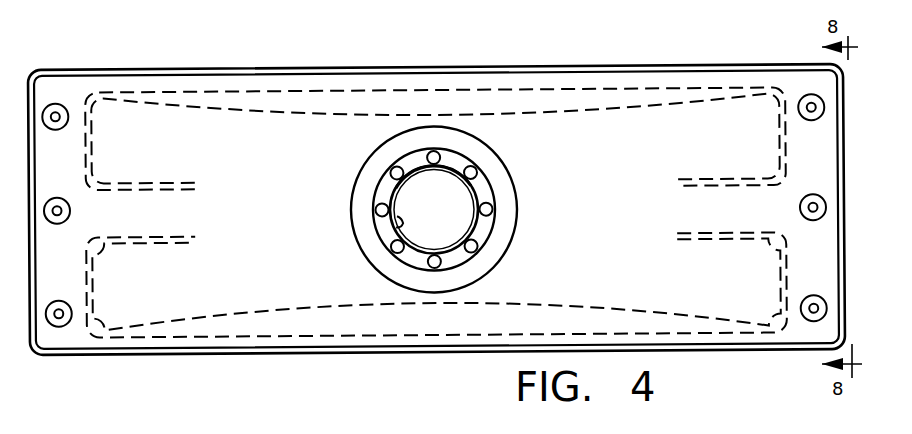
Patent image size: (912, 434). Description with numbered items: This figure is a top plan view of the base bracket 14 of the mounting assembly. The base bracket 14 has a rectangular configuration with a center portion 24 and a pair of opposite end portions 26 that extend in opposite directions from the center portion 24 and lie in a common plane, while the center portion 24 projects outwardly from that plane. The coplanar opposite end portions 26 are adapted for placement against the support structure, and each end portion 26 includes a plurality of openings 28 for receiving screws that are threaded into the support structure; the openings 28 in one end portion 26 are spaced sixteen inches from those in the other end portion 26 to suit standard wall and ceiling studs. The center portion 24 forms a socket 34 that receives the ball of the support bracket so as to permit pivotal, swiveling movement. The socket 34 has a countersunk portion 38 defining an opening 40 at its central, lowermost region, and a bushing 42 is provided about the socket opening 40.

The base bracket 14 is at (246, 358).
The center portion 24 is at (512, 185).
The opposite end portions 26 is at (80, 337).
The openings 28 is at (56, 127).
The socket 34 is at (496, 238).
The countersunk portion 38 is at (366, 181).
The opening 40 is at (398, 222).
The bushing 42 is at (388, 240).